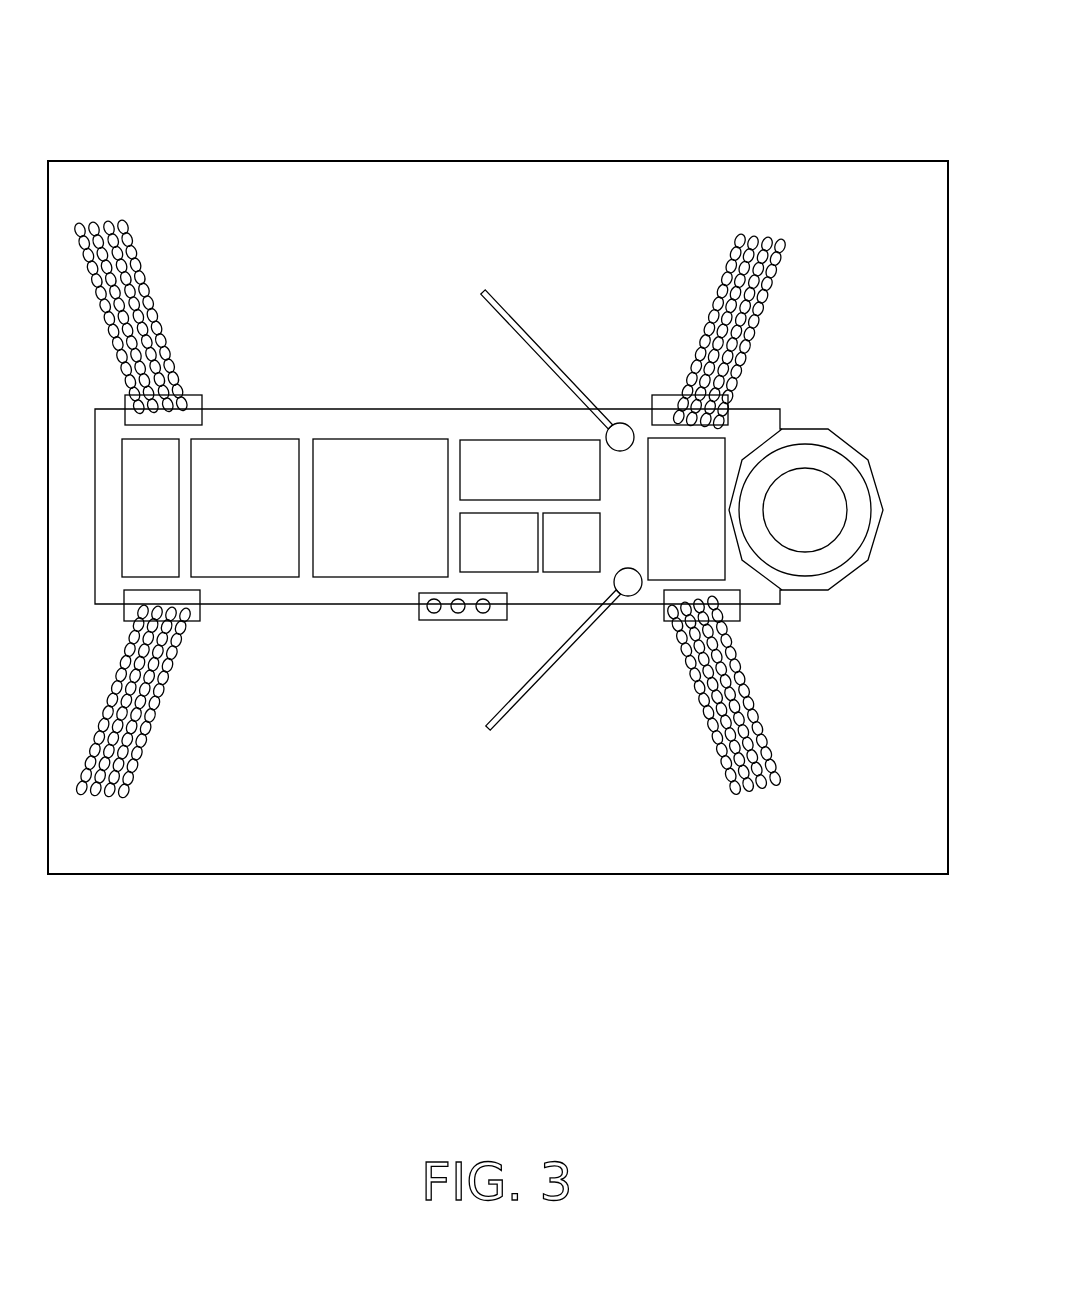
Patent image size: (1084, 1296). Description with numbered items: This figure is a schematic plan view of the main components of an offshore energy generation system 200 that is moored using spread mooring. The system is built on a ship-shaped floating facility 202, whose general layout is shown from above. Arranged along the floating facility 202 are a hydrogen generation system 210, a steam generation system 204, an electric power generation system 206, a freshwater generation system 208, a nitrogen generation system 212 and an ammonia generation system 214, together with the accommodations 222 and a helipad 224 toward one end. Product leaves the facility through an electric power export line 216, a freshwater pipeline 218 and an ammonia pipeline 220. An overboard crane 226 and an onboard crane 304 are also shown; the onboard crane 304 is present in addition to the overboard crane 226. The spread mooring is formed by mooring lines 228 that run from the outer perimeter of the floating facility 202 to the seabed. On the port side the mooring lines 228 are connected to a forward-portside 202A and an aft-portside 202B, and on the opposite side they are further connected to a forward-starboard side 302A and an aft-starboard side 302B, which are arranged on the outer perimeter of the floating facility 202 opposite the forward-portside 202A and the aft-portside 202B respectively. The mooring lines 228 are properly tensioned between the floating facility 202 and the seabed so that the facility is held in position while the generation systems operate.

The offshore energy generation system 200 is at (892, 75).
The floating facility 202 is at (489, 538).
The forward-portside 202A is at (202, 636).
The aft-portside 202B is at (757, 633).
The steam generation system 204 is at (245, 508).
The electric power generation system 206 is at (380, 508).
The freshwater generation system 208 is at (530, 470).
The hydrogen generation system 210 is at (150, 508).
The nitrogen generation system 212 is at (499, 542).
The ammonia generation system 214 is at (571, 542).
The electric power export line 216 is at (396, 637).
The freshwater pipeline 218 is at (434, 645).
The ammonia pipeline 220 is at (498, 645).
The accommodations 222 is at (686, 509).
The helipad 224 is at (829, 473).
The overboard crane 226 is at (564, 654).
The mooring lines 228 is at (430, 507).
The forward-starboard side 302A is at (203, 376).
The aft-starboard side 302B is at (670, 370).
The onboard crane 304 is at (557, 346).